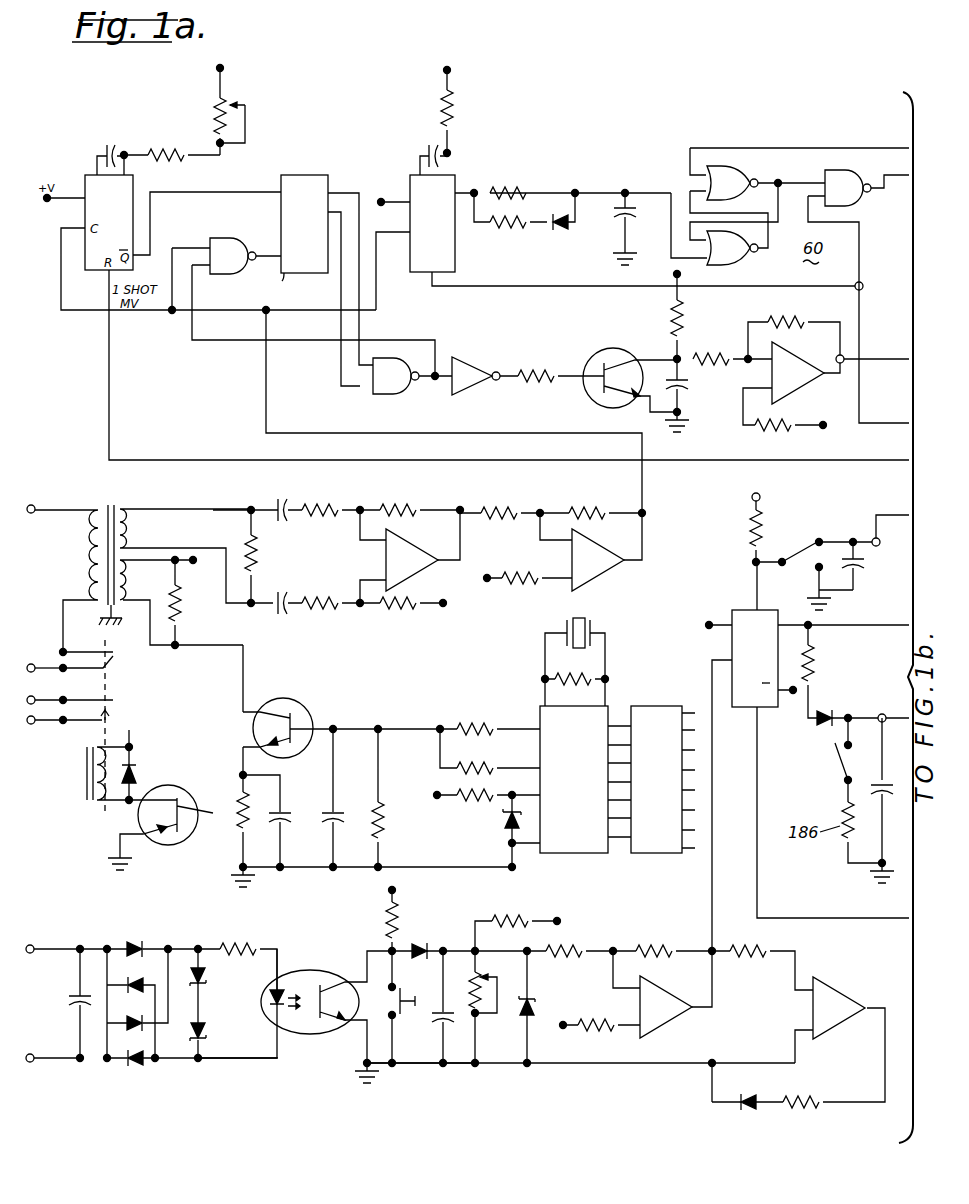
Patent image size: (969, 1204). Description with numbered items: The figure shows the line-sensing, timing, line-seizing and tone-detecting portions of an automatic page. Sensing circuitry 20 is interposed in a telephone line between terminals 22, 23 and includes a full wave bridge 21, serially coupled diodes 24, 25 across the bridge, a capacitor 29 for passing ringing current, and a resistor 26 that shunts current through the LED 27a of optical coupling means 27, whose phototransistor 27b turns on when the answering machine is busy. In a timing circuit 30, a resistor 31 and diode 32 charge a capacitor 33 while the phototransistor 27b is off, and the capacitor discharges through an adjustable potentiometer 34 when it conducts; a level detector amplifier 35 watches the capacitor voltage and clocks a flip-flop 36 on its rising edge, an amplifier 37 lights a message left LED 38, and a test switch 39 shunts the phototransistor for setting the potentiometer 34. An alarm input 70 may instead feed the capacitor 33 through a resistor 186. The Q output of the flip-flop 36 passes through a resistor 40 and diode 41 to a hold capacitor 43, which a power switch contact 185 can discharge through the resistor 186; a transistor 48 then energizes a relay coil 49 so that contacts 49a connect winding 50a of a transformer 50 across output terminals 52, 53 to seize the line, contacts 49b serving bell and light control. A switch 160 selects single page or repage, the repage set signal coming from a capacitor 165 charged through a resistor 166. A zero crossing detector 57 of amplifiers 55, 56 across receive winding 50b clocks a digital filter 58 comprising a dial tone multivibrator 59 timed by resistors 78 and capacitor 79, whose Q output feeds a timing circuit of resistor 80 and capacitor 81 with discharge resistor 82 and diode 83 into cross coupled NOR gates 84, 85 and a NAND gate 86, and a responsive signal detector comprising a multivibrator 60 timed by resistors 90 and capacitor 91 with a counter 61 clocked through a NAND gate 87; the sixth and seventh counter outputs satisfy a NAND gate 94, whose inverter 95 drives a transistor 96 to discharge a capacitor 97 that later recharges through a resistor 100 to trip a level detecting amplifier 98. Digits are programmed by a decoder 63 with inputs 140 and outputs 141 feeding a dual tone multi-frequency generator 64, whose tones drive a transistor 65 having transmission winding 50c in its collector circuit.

The sensing circuit 20 is at (215, 1070).
The full wave bridge 21 is at (140, 941).
The terminal 22 is at (35, 946).
The terminal 23 is at (30, 1062).
The diode 24 is at (208, 972).
The diode 25 is at (208, 1030).
The resistor 26 is at (246, 942).
The optical coupling means 27 is at (323, 968).
The LED 27a is at (283, 990).
The phototransistor 27b is at (328, 1032).
The capacitor 29 is at (72, 1005).
The timing circuit 30 is at (450, 1071).
The resistor 31 is at (396, 918).
The diode 32 is at (424, 942).
The capacitor 33 is at (436, 1002).
The adjustable potentiometer 34 is at (473, 950).
The amplifier 35 is at (661, 1033).
The flip-flop 36 is at (770, 718).
The amplifier 37 is at (850, 995).
The light emitting diode 38 is at (746, 1112).
The message left timer test switch 39 is at (419, 1030).
The resistor 40 is at (818, 672).
The diode 41 is at (830, 710).
The capacitor 43 is at (840, 798).
The transistor 48 is at (166, 784).
The relay coil 49 is at (85, 807).
The contacts 49a is at (120, 666).
The contacts 49b is at (122, 708).
The transformer 50 is at (105, 507).
The winding 50a is at (95, 563).
The winding 50b is at (130, 510).
The transmission winding 50c is at (132, 566).
The output terminal 52 is at (33, 514).
The output terminal 53 is at (34, 662).
The amplifier 55 is at (420, 557).
The amplifier 56 is at (603, 584).
The zero crossing detector 57 is at (494, 554).
The digital filter 58 is at (308, 143).
The retriggerable multivibrator 59 is at (418, 276).
The retriggerable multivibrator 60 is at (133, 178).
The counter 61 is at (284, 274).
The decoder 63 is at (643, 857).
The dual tone multi-frequency generator 64 is at (564, 857).
The transistor 65 is at (297, 700).
The alarm output 70 is at (578, 911).
The resistors 78 is at (452, 114).
The capacitor 79 is at (426, 142).
The resistor 80 is at (508, 185).
The capacitor 81 is at (628, 202).
The resistor 82 is at (510, 233).
The diode 83 is at (554, 238).
The NOR gate 84 is at (754, 252).
The NOR gate 85 is at (732, 165).
The NAND gate 86 is at (838, 170).
The NAND gate 87 is at (235, 238).
The resistors 90 is at (214, 110).
The capacitor 91 is at (108, 144).
The NAND gate 94 is at (380, 395).
The inverter 95 is at (470, 354).
The transistor 96 is at (618, 356).
The capacitor 97 is at (693, 394).
The level detecting amplifier 98 is at (811, 360).
The resistor 100 is at (686, 324).
The input terminals 140 is at (672, 704).
The outputs 141 is at (610, 702).
The switch 160 is at (807, 550).
The capacitor 165 is at (863, 586).
The resistor 166 is at (750, 526).
The contact 185 is at (835, 763).
The resistor 186 is at (510, 899).